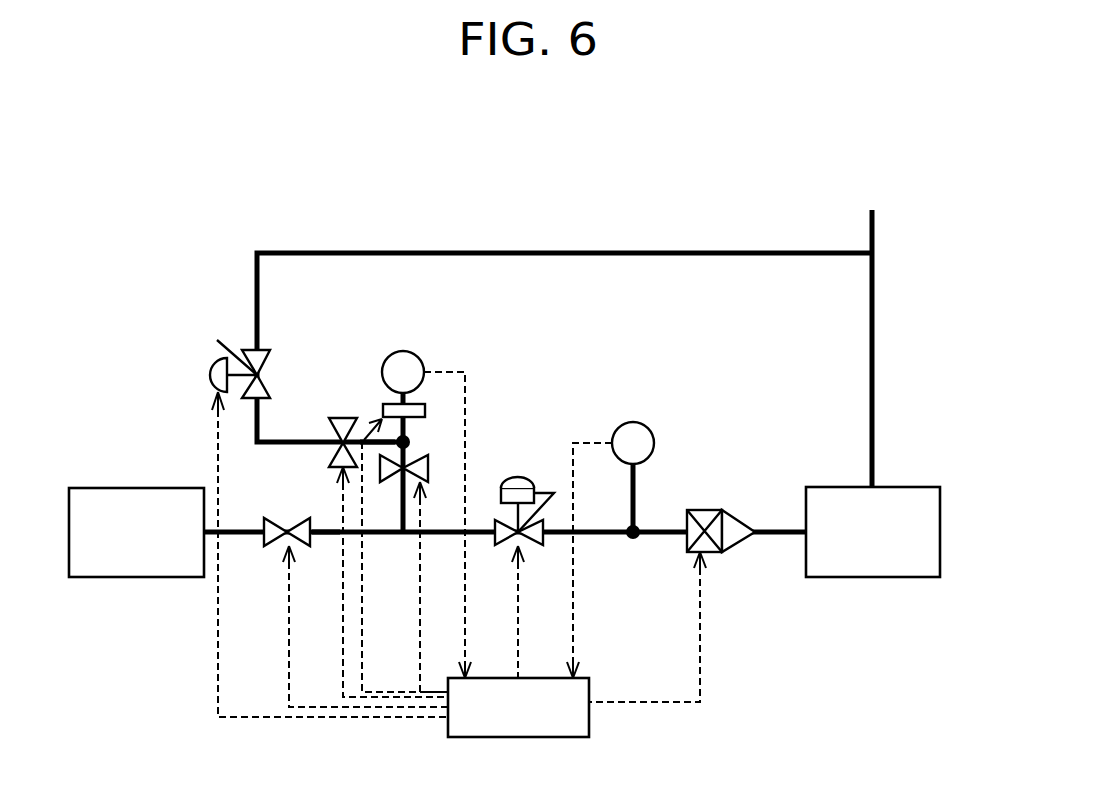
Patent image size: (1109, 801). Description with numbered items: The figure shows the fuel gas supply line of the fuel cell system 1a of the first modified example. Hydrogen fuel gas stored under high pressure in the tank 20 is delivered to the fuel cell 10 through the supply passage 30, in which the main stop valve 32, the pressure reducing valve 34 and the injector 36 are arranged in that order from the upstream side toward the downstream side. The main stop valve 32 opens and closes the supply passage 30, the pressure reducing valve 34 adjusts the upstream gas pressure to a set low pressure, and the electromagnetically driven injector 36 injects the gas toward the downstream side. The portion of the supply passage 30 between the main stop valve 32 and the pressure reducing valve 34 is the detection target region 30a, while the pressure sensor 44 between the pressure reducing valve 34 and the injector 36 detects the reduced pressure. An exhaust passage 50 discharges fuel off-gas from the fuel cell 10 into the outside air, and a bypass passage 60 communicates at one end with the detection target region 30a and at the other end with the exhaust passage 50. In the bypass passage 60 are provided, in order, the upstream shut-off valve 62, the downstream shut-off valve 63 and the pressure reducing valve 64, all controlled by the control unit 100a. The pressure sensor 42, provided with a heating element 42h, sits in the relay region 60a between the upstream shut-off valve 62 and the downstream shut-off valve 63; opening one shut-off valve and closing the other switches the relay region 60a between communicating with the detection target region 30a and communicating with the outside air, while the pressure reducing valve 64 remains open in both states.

The fuel cell system 1a is at (914, 215).
The fuel cell 10 is at (908, 487).
The tank 20 is at (128, 488).
The supply passage 30 is at (607, 536).
The detection target region 30a is at (323, 538).
The main stop valve 32 is at (286, 518).
The pressure reducing valve 34 is at (495, 520).
The injector 36 is at (720, 554).
The pressure sensor 42 is at (403, 351).
The heating element 42h is at (448, 386).
The pressure sensor 44 is at (633, 422).
The exhaust passage 50 is at (873, 318).
The bypass passage 60 is at (257, 288).
The relay region 60a is at (396, 443).
The upstream shut-off valve 62 is at (422, 478).
The downstream shut-off valve 63 is at (340, 418).
The pressure reducing valve 64 is at (202, 367).
The control unit 100a is at (589, 678).